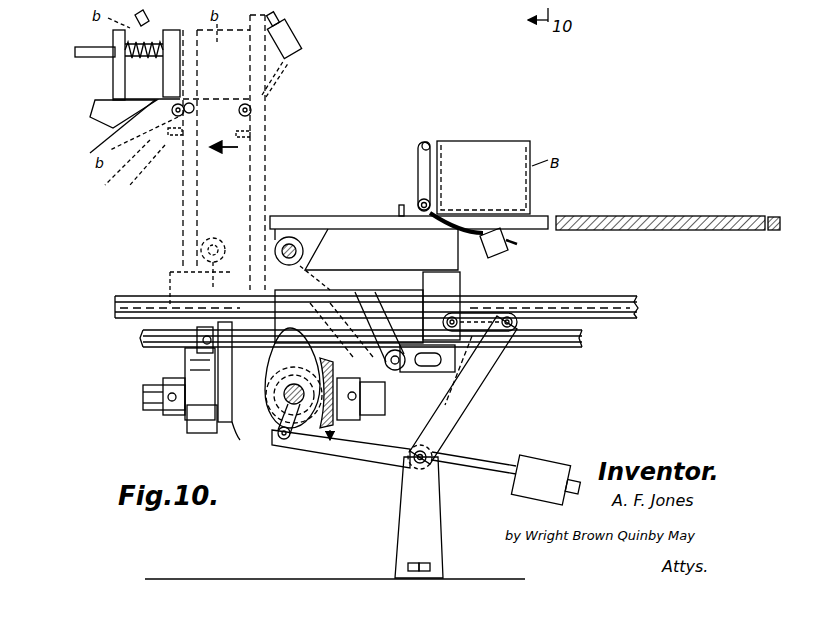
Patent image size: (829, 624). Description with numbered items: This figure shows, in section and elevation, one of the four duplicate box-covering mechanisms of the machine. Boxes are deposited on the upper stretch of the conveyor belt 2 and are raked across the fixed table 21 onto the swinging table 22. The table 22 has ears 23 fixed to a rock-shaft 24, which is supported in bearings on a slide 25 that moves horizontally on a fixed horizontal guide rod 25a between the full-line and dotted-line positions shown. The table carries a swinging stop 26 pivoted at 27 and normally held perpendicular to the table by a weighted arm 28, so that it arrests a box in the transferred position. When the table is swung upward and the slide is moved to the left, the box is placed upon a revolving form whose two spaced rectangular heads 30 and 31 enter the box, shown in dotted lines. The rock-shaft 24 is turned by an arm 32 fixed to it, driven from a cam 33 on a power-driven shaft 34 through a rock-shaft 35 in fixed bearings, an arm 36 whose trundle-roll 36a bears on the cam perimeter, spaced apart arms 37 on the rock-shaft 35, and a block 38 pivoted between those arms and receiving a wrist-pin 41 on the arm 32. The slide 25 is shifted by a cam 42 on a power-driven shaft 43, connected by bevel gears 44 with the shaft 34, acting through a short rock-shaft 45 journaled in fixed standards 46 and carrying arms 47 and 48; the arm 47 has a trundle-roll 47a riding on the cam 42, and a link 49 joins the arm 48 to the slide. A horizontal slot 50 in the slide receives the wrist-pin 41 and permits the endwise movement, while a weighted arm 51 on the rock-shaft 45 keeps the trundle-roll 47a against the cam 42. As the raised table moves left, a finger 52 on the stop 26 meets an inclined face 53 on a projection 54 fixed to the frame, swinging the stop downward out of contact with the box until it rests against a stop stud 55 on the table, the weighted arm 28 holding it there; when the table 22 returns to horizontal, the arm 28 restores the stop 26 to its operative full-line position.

The conveyor belt 2 is at (772, 215).
The fixed table 21 is at (644, 215).
The swinging table 22 is at (200, 150).
The ears 23 is at (366, 259).
The rock-shaft 24 is at (323, 197).
The slide 25 is at (405, 288).
The fixed horizontal guide rod 25a is at (558, 300).
The swinging stop 26 is at (418, 175).
The pivot 27 is at (418, 204).
The weighted arm 28 is at (468, 246).
The rectangular head 30 is at (176, 32).
The rectangular head 31 is at (113, 37).
The arm 32 is at (325, 255).
The cam 33 is at (195, 365).
The power-driven shaft 34 is at (150, 400).
The rock-shaft 35 is at (143, 338).
The arm 36 is at (238, 440).
The trundle-roll 36a is at (205, 433).
The spaced apart arms 37 is at (478, 350).
The block 38 is at (437, 372).
The wrist-pin 41 is at (384, 356).
The cam 42 is at (280, 408).
The power-driven shaft 43 is at (300, 412).
The bevel gears 44 is at (350, 420).
The short rock-shaft 45 is at (414, 463).
The fixed standards 46 is at (430, 527).
The arm 47 is at (350, 452).
The trundle-roll 47a is at (284, 440).
The arm 48 is at (485, 410).
The link 49 is at (490, 313).
The horizontal slot 50 is at (418, 366).
The weighted arm 51 is at (491, 463).
The finger 52 is at (195, 105).
The inclined face 53 is at (107, 133).
The projection 54 is at (100, 118).
The stop stud 55 is at (182, 138).